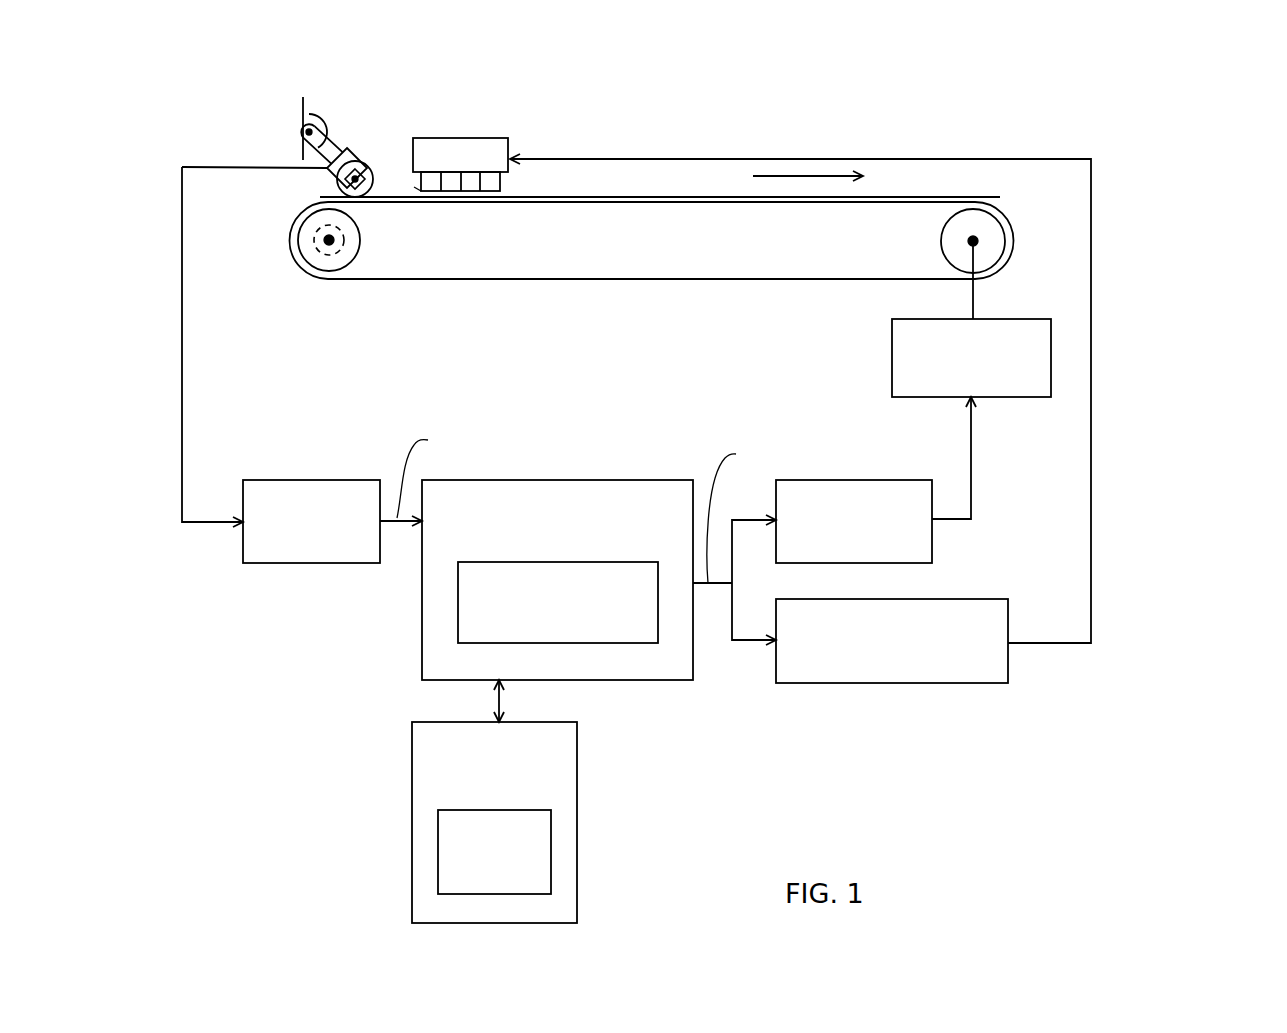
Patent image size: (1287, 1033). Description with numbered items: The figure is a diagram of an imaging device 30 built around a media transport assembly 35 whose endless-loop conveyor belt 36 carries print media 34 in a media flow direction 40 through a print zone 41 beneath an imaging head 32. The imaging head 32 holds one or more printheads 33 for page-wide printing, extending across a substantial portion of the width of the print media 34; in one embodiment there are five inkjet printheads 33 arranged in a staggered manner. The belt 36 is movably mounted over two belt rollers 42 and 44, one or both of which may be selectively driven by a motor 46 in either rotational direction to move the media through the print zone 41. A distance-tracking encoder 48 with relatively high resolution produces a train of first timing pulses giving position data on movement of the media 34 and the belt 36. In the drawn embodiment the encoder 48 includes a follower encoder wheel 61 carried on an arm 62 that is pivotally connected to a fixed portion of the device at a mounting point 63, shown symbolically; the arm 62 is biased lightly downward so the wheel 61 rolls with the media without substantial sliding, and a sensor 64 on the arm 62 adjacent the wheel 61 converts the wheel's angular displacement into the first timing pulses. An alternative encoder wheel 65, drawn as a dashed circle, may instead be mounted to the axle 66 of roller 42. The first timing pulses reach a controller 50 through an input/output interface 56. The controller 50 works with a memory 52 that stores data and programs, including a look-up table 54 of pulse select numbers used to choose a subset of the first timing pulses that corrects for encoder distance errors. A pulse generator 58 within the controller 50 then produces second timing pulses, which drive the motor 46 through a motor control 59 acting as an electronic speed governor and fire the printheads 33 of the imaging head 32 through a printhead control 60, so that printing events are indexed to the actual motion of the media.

The imaging device 30 is at (1152, 150).
The imaging head 32 is at (538, 121).
The printheads 33 is at (500, 186).
The print media 34 is at (666, 196).
The media transport assembly 35 is at (398, 296).
The conveyor belt 36 is at (485, 279).
The media flow direction 40 is at (817, 174).
The print zone 41 is at (412, 186).
The belt roller 42 is at (365, 257).
The belt roller 44 is at (946, 240).
The motor 46 is at (1022, 368).
The distance-tracking encoder 48 is at (343, 111).
The controller 50 is at (619, 528).
The memory 52 is at (483, 787).
The look-up table 54 is at (483, 886).
The input/output interface 56 is at (299, 542).
The pulse generator 58 is at (546, 637).
The motor control 59 is at (842, 555).
The printhead control 60 is at (954, 663).
The follower encoder wheel 61 is at (370, 178).
The arm 62 is at (328, 138).
The mounting point 63 is at (306, 132).
The sensor 64 is at (338, 172).
The encoder wheel 65 is at (321, 252).
The axle 66 is at (331, 243).